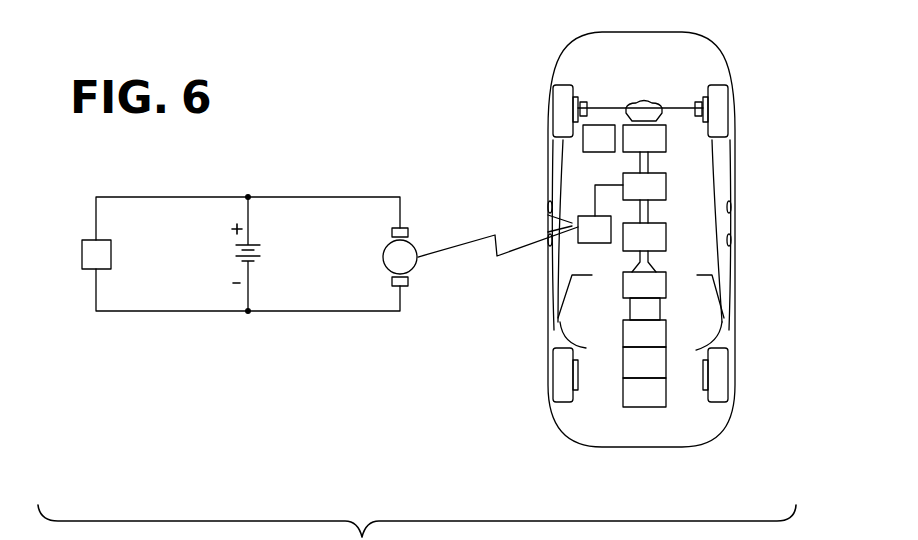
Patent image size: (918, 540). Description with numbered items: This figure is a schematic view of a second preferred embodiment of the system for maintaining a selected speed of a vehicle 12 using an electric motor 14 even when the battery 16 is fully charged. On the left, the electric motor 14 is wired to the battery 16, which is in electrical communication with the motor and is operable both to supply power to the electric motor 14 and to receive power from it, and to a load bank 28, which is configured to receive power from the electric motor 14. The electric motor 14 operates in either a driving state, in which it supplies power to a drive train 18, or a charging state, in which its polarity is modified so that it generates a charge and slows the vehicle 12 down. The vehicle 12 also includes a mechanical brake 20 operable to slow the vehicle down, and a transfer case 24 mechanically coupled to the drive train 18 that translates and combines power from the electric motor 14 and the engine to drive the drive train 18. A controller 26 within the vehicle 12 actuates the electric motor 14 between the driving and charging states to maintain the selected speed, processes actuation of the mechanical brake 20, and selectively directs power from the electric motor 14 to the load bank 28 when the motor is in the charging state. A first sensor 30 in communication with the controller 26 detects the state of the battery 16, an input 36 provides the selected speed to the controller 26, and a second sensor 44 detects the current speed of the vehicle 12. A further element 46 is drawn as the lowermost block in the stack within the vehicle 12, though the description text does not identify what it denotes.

The vehicle 12 is at (612, 484).
The electric motor 14 is at (383, 257).
The battery 16 is at (255, 247).
The drive train 18 is at (666, 138).
The mechanical brake 20 is at (699, 103).
The transfer case 24 is at (666, 190).
The controller 26 is at (576, 215).
The load bank 28 is at (78, 254).
The first sensor 30 is at (666, 240).
The input 36 is at (666, 284).
The second sensor 44 is at (666, 340).
The hydraulic pump 46 is at (666, 395).